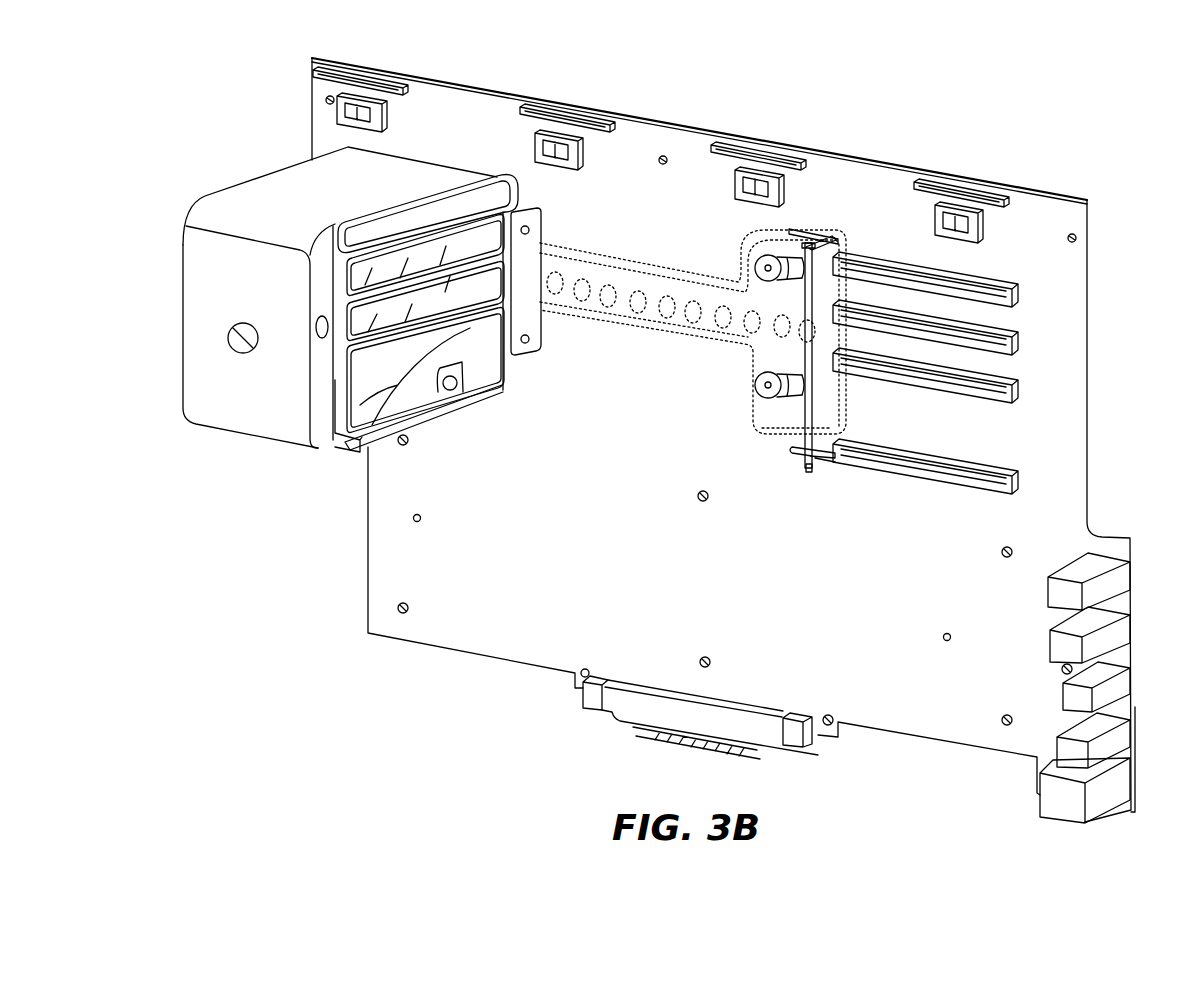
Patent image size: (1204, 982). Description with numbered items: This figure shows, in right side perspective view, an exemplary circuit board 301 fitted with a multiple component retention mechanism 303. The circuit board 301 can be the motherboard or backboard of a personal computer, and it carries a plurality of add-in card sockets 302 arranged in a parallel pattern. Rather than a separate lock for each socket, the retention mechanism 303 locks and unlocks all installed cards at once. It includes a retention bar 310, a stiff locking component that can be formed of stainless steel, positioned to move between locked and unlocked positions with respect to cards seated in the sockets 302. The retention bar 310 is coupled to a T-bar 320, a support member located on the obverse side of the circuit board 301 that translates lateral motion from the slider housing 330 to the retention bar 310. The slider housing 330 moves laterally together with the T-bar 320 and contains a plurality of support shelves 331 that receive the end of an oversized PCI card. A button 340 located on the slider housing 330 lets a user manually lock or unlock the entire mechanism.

The circuit board 301 is at (524, 597).
The add-in card sockets 302 is at (1016, 478).
The component retention mechanism 303 is at (1044, 117).
The retention bar 310 is at (822, 466).
The T-bar 320 is at (668, 333).
The slider housing 330 is at (233, 220).
The support shelves 331 is at (347, 388).
The button 340 is at (243, 355).